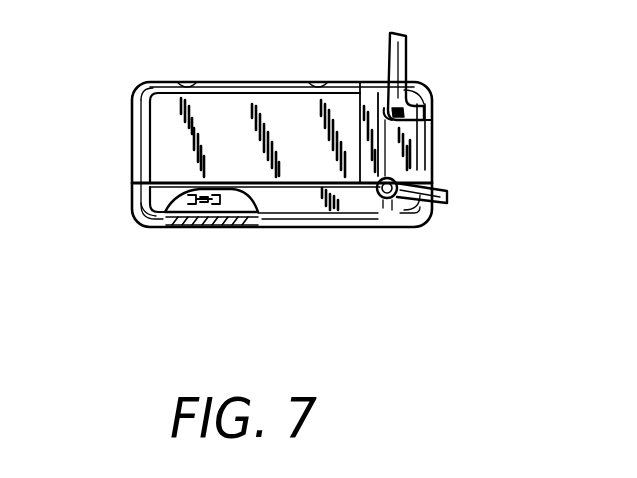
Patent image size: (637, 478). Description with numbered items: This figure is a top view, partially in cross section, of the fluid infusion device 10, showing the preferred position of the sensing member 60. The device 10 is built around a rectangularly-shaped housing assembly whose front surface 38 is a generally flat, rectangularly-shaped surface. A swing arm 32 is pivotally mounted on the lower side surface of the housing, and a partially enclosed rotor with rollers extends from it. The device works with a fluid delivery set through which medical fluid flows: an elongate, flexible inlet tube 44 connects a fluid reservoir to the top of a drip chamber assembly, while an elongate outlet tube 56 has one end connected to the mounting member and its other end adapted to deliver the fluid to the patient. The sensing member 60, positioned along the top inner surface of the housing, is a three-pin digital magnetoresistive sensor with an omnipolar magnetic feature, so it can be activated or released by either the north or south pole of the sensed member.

The fluid infusion device 10 is at (128, 112).
The front surface 38 is at (240, 80).
The outlet tube 56 is at (390, 45).
The swing arm 32 is at (432, 142).
The inlet tube 44 is at (442, 197).
The sensing member 60 is at (192, 193).